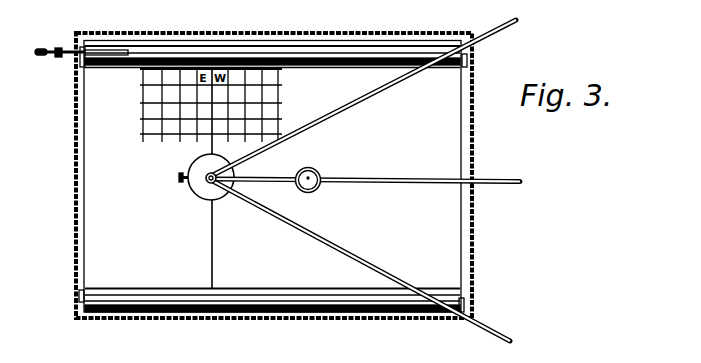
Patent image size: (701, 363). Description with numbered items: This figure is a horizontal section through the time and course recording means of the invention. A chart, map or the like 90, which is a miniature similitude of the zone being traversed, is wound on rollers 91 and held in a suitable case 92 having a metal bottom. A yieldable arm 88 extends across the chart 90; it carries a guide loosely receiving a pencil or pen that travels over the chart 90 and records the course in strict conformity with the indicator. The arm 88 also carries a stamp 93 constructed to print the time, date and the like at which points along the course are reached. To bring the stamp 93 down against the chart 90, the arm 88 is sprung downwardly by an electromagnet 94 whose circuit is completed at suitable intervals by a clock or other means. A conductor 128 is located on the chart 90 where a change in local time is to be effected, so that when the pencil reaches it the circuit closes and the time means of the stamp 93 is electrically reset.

The yieldable arm 88 is at (408, 178).
The chart 90 is at (100, 167).
The rollers 91 is at (124, 67).
The case 92 is at (143, 32).
The stamp 93 is at (200, 189).
The electromagnet 94 is at (314, 187).
The conductor 128 is at (212, 142).